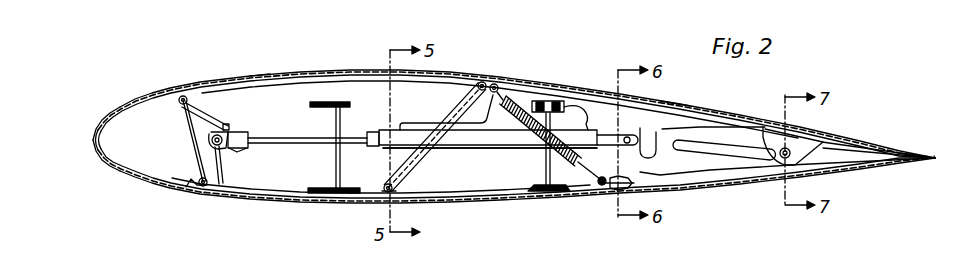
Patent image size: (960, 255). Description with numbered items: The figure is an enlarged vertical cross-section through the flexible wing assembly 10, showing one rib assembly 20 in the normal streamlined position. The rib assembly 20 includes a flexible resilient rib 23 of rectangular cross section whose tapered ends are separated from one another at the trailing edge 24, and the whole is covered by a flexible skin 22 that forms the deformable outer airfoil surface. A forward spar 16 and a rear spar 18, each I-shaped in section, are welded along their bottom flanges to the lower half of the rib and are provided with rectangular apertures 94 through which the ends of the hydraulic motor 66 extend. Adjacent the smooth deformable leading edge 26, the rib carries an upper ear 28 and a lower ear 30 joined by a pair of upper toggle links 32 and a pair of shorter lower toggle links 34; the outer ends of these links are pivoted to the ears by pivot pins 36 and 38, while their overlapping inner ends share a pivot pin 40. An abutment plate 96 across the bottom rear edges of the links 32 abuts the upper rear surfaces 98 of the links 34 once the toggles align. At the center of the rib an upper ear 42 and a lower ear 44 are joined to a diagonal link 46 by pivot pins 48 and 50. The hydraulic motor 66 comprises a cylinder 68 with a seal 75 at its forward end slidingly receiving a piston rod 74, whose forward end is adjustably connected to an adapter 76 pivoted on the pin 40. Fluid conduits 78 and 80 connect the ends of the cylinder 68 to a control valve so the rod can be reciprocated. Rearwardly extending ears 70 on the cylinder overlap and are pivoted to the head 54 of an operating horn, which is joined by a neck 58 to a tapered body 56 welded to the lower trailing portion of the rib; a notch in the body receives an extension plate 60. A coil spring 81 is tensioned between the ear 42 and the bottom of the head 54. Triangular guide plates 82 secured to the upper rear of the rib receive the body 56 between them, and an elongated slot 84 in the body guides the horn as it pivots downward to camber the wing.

The flexible wing assembly 10 is at (531, 75).
The forward spar 16 is at (342, 101).
The rear spar 18 is at (536, 197).
The rib assembly 20 is at (220, 70).
The flexible skin 22 is at (674, 103).
The flexible resilient rib 23 is at (258, 74).
The trailing edge 24 is at (934, 156).
The leading edge 26 is at (92, 135).
The upper ear 28 is at (181, 97).
The lower ear 30 is at (190, 186).
The upper toggle link 32 is at (211, 121).
The lower toggle link 34 is at (226, 170).
The pivot pin 36 is at (189, 118).
The pivot pin 38 is at (199, 180).
The pivot pin 40 is at (211, 143).
The upper ear 42 is at (495, 84).
The lower ear 44 is at (394, 193).
The diagonal link 46 is at (443, 120).
The pivot pin 48 is at (482, 82).
The pivot pin 50 is at (386, 184).
The head 54 is at (639, 135).
The tapered body 56 is at (688, 133).
The neck 58 is at (623, 170).
The extension plate 60 is at (866, 146).
The hydraulic motor 66 is at (463, 149).
The hydraulic cylinder 68 is at (485, 146).
The ears 70 is at (605, 178).
The piston rod 74 is at (284, 140).
The seal 75 is at (375, 131).
The adapter 76 is at (246, 136).
The fluid conduit 78 is at (413, 122).
The fluid conduit 80 is at (582, 108).
The coil spring 81 is at (585, 170).
The guide plate 82 is at (823, 143).
The elongated slot 84 is at (703, 147).
The rectangular aperture 94 is at (336, 177).
The abutment plate 96 is at (231, 126).
The upper rear surfaces 98 is at (243, 150).